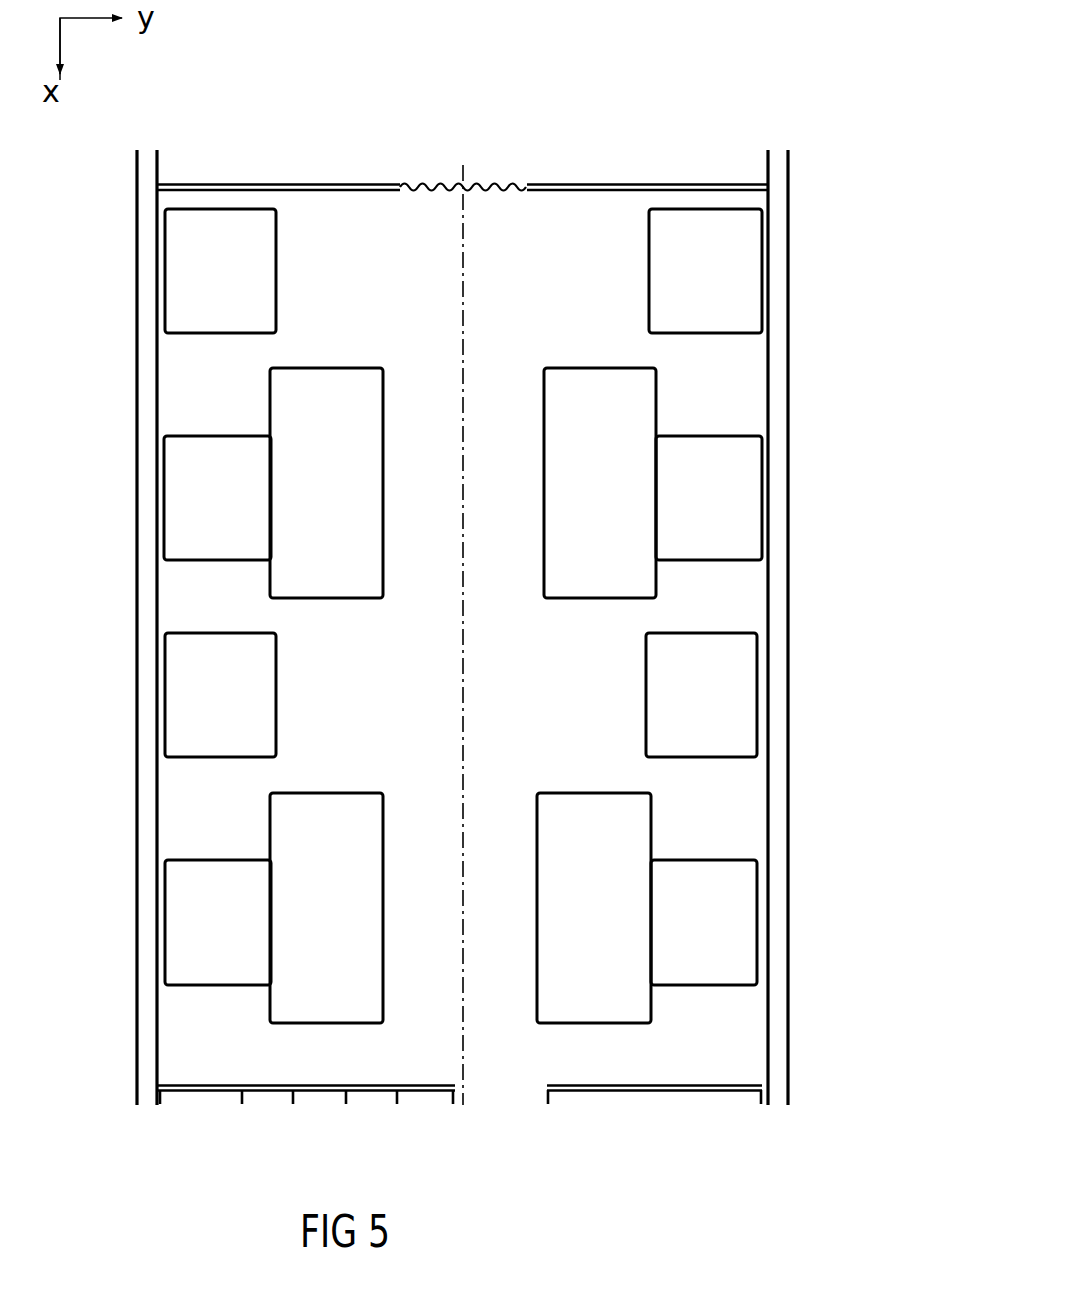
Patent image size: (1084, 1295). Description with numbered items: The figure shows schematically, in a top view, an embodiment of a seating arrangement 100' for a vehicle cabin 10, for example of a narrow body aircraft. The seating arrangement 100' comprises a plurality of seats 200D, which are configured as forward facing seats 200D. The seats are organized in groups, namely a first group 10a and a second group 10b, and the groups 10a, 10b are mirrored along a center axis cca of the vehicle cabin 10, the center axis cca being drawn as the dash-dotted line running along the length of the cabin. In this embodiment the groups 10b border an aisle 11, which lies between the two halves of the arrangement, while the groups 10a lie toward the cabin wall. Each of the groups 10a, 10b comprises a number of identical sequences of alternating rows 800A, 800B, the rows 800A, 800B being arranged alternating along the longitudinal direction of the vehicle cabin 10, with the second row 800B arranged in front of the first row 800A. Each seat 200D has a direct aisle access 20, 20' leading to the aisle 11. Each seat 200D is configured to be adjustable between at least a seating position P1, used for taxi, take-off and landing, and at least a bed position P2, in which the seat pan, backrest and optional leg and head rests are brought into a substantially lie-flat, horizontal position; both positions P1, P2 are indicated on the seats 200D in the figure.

The seating arrangement 100' is at (547, 579).
The vehicle cabin 10 is at (600, 152).
The first group 10a is at (345, 152).
The second group 10b is at (222, 152).
The center axis cca is at (462, 160).
The aisle 11 is at (505, 597).
The direct aisle access 20 is at (463, 616).
The direct aisle access 20' is at (463, 558).
The seats 200D is at (770, 233).
The seating position P1 is at (770, 245).
The bed position P2 is at (664, 392).
The first row 800A is at (812, 312).
The second row 800B is at (812, 550).